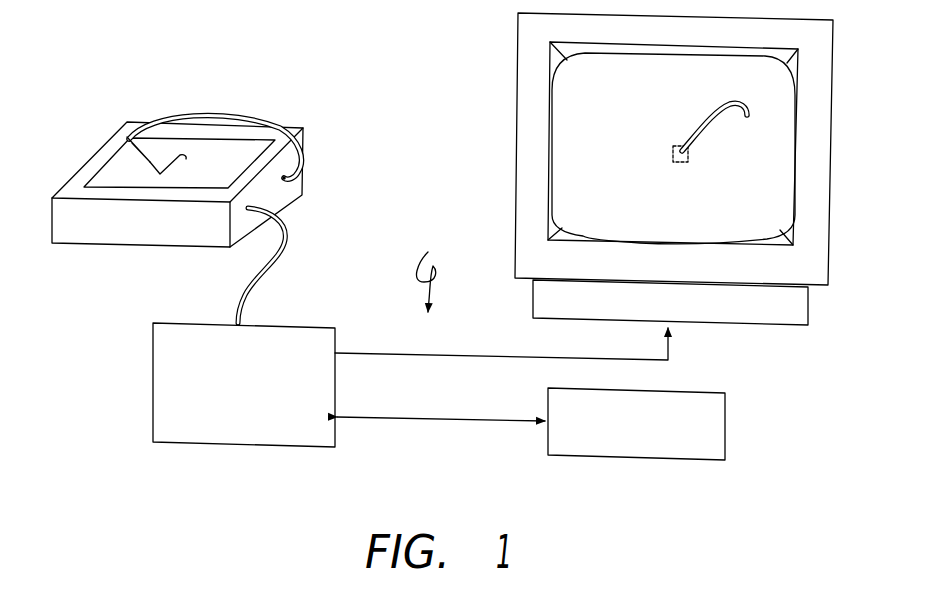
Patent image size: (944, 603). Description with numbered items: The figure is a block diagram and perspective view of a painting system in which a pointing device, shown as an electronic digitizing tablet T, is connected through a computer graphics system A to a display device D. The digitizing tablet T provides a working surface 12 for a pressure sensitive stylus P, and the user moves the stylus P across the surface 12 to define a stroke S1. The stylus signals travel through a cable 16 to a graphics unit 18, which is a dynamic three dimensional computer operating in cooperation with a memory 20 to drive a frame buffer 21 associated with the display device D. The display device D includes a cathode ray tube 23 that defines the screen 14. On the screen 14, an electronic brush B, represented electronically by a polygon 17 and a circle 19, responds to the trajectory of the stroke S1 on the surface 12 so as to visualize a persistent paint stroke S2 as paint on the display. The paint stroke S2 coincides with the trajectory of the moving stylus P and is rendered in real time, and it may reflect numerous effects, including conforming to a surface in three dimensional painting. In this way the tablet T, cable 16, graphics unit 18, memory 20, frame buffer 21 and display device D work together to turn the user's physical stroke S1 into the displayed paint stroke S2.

The working surface 12 is at (113, 172).
The digitizing tablet T is at (305, 138).
The stroke S1 is at (186, 158).
The stylus P is at (141, 146).
The cable 16 is at (273, 263).
The graphics unit 18 is at (253, 447).
The memory 20 is at (647, 460).
The frame buffer 21 is at (778, 326).
The computer graphics system A is at (425, 269).
The display device D is at (833, 65).
The cathode ray tube 23 is at (573, 147).
The screen 14 is at (753, 200).
The electronic brush B is at (676, 142).
The paint stroke S2 is at (752, 110).
The polygon 17 is at (688, 156).
The circle 19 is at (684, 161).